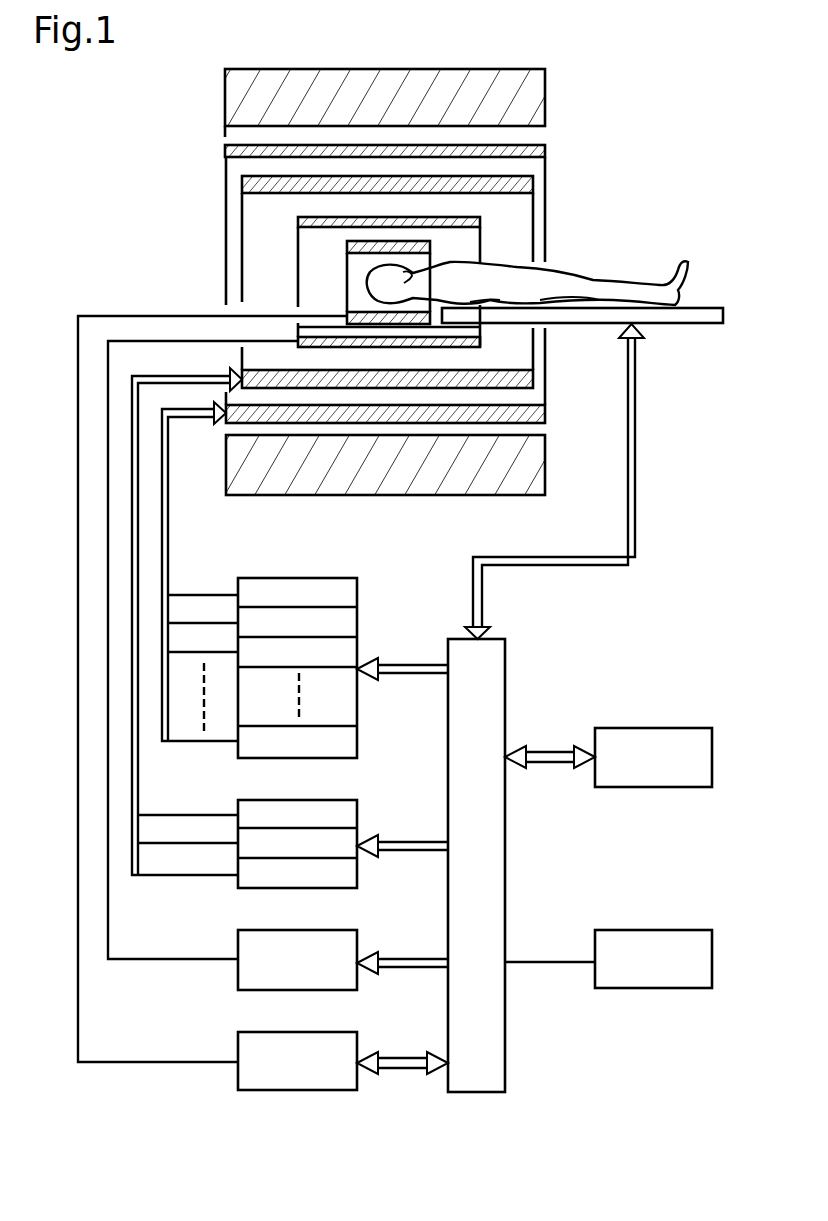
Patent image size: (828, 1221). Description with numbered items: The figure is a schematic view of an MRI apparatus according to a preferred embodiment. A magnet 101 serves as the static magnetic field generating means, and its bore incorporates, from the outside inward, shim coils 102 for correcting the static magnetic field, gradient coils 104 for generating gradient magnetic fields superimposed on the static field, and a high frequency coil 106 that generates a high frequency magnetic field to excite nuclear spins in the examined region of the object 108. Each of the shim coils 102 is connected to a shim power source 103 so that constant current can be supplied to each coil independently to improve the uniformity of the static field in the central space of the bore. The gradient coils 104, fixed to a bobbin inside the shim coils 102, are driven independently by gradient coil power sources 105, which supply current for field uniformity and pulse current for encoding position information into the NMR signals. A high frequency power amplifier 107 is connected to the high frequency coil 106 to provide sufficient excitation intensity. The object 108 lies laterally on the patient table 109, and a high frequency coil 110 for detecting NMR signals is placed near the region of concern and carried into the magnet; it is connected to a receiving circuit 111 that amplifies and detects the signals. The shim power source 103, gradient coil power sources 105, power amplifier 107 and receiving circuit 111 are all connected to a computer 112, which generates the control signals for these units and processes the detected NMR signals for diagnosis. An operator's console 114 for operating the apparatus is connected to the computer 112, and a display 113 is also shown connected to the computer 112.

The magnet 101 is at (545, 99).
The shim coils 102 is at (545, 172).
The shim power source 103 is at (357, 608).
The gradient coils 104 is at (545, 202).
The gradient coil power sources 105 is at (357, 822).
The high frequency coil 106 is at (481, 233).
The high frequency power amplifier 107 is at (357, 947).
The object 108 is at (659, 288).
The patient table 109 is at (723, 308).
The high frequency coil for detecting NMR signals 110 is at (347, 253).
The receiving circuit 111 is at (357, 1047).
The computer 112 is at (505, 673).
The display 113 is at (712, 957).
The operator's console 114 is at (712, 753).